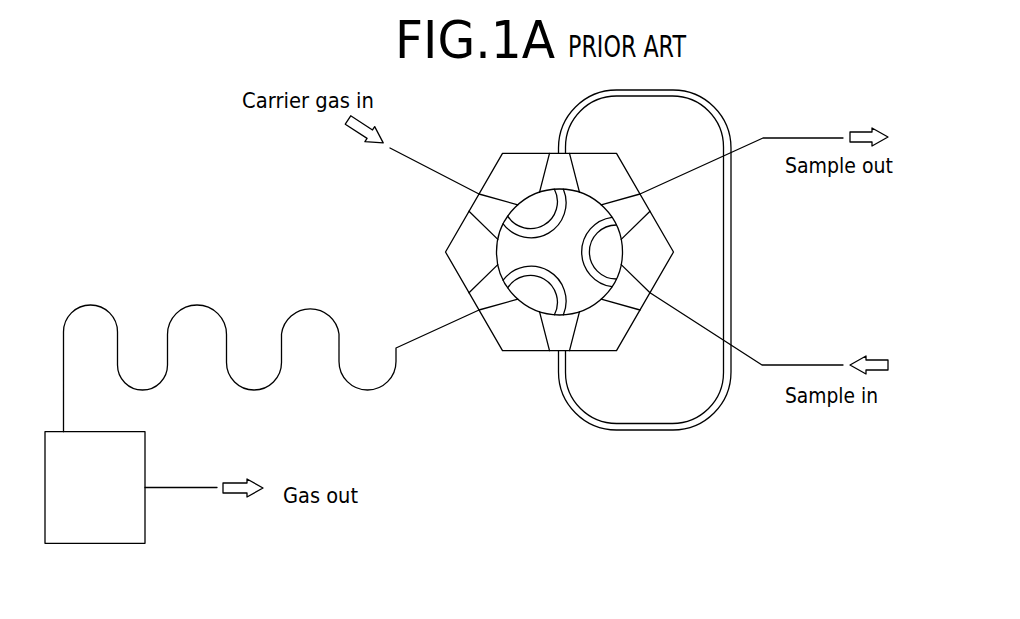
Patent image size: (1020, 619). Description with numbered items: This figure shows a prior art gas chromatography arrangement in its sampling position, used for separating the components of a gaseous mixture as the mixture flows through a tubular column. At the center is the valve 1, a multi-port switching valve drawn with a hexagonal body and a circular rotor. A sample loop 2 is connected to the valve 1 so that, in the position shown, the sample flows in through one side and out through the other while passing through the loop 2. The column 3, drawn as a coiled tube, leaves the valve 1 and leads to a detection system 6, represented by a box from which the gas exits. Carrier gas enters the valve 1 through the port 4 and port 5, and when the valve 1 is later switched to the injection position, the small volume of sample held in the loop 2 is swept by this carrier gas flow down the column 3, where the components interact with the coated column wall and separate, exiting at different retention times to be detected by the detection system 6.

The valve 1 is at (504, 173).
The loop 2 is at (746, 296).
The column 3 is at (280, 312).
The port 4 is at (483, 217).
The port 5 is at (491, 305).
The detector 6 is at (124, 555).